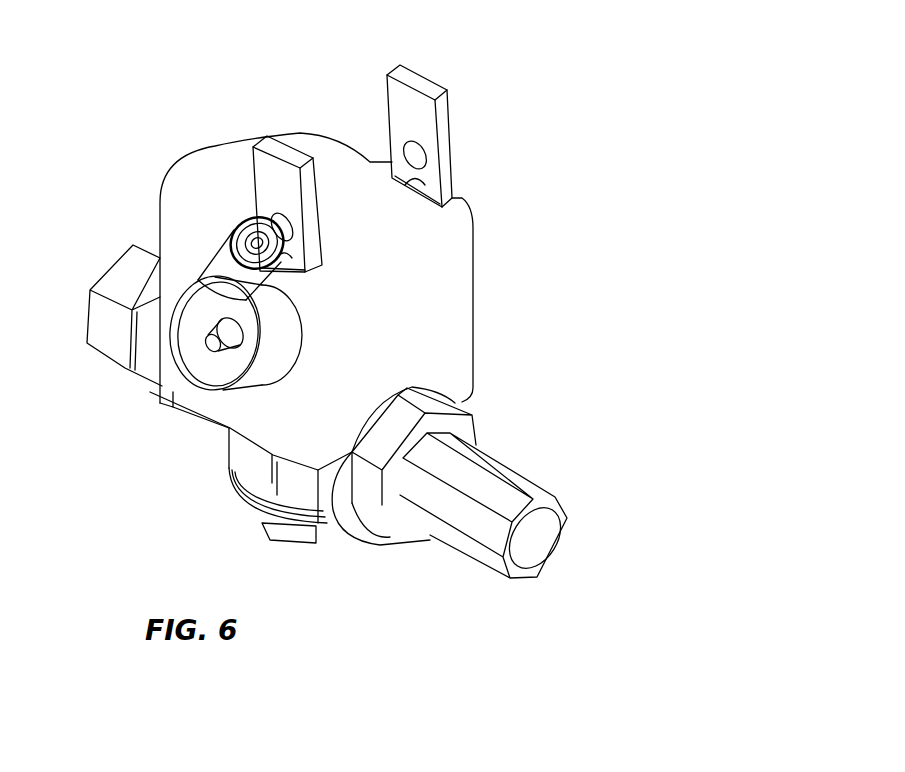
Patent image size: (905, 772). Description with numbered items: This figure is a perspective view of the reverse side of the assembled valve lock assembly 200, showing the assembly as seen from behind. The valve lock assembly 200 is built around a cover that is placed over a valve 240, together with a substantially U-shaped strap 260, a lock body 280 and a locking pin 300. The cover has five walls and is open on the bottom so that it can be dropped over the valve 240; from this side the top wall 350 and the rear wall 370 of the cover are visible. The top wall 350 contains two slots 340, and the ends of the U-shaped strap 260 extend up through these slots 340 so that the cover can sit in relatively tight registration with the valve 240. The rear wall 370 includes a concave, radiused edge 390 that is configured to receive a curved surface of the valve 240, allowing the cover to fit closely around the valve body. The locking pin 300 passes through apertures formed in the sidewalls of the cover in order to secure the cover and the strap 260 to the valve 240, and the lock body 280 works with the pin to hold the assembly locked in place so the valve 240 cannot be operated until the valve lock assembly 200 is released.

The valve lock assembly 200 is at (206, 44).
The valve 240 is at (247, 477).
The U-shaped strap 260 is at (443, 118).
The lock body 280 is at (207, 343).
The locking pin 300 is at (223, 350).
The slots 340 is at (302, 273).
The top wall 350 is at (377, 212).
The rear wall 370 is at (420, 340).
The concave radiused edges 390 is at (430, 380).